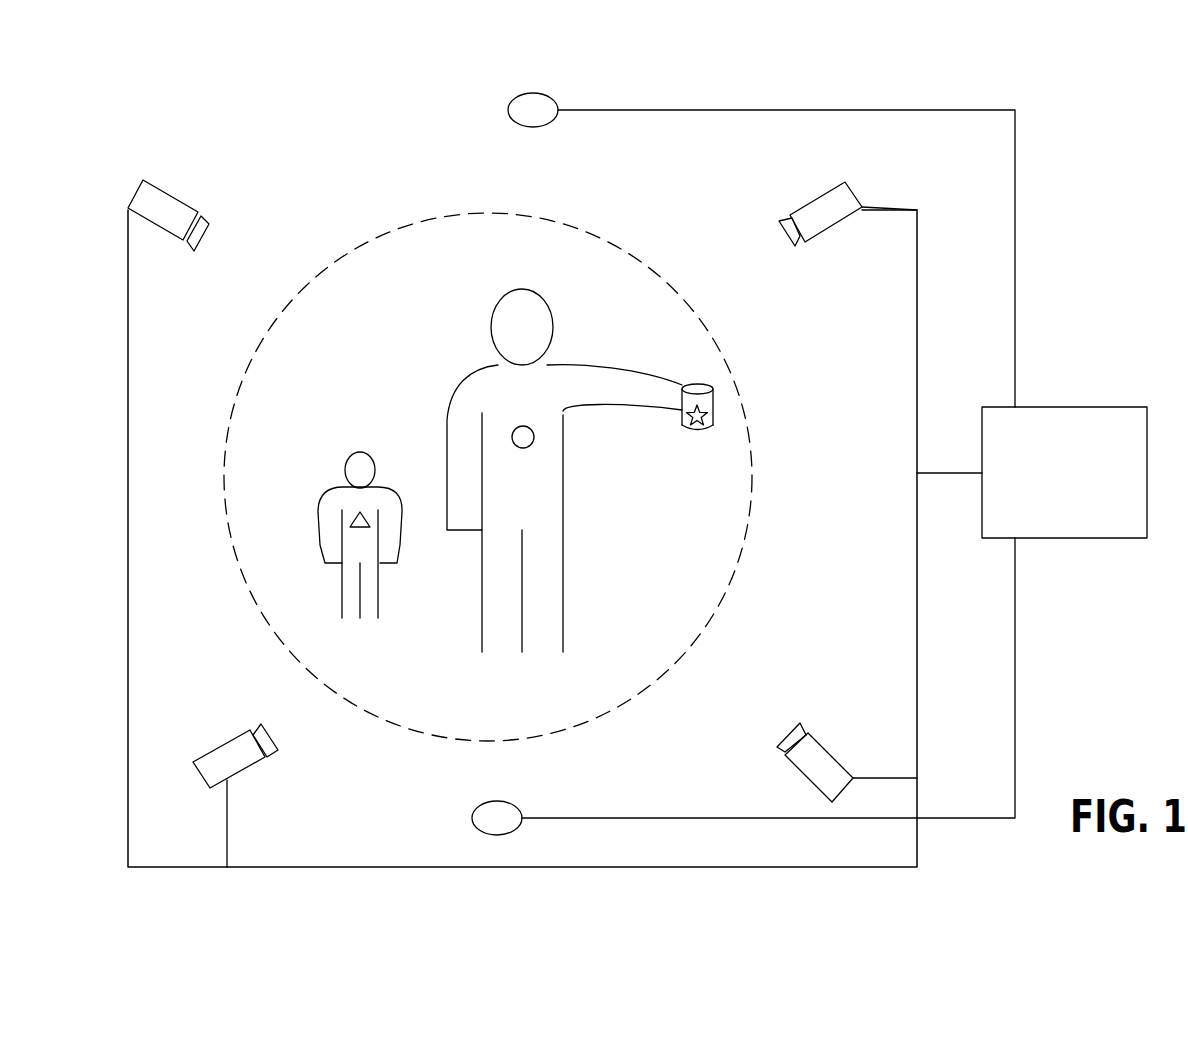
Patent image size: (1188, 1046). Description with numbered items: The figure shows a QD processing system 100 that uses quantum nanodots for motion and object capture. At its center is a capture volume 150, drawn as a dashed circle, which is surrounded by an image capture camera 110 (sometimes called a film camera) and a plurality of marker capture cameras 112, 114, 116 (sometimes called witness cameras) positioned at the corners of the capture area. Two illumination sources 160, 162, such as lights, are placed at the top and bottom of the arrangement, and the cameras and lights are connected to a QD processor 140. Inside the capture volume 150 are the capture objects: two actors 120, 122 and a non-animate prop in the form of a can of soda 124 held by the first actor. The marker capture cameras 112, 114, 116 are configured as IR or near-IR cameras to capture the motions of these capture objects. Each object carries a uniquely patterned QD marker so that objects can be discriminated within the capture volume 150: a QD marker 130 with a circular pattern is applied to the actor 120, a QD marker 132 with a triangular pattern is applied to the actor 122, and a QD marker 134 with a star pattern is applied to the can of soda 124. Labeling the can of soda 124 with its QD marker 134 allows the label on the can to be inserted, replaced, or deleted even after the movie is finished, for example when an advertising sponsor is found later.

The QD processing system 100 is at (309, 115).
The image capture camera 110 is at (172, 197).
The marker capture camera 112 is at (853, 192).
The marker capture camera 114 is at (818, 742).
The marker capture camera 116 is at (248, 765).
The actor 120 is at (540, 293).
The actor 122 is at (350, 453).
The can of soda 124 is at (714, 407).
The QD marker 130 is at (527, 447).
The QD marker 132 is at (344, 527).
The QD marker 134 is at (706, 428).
The QD processor 140 is at (1046, 520).
The capture volume 150 is at (368, 301).
The illumination source 160 is at (511, 104).
The illumination source 162 is at (474, 811).